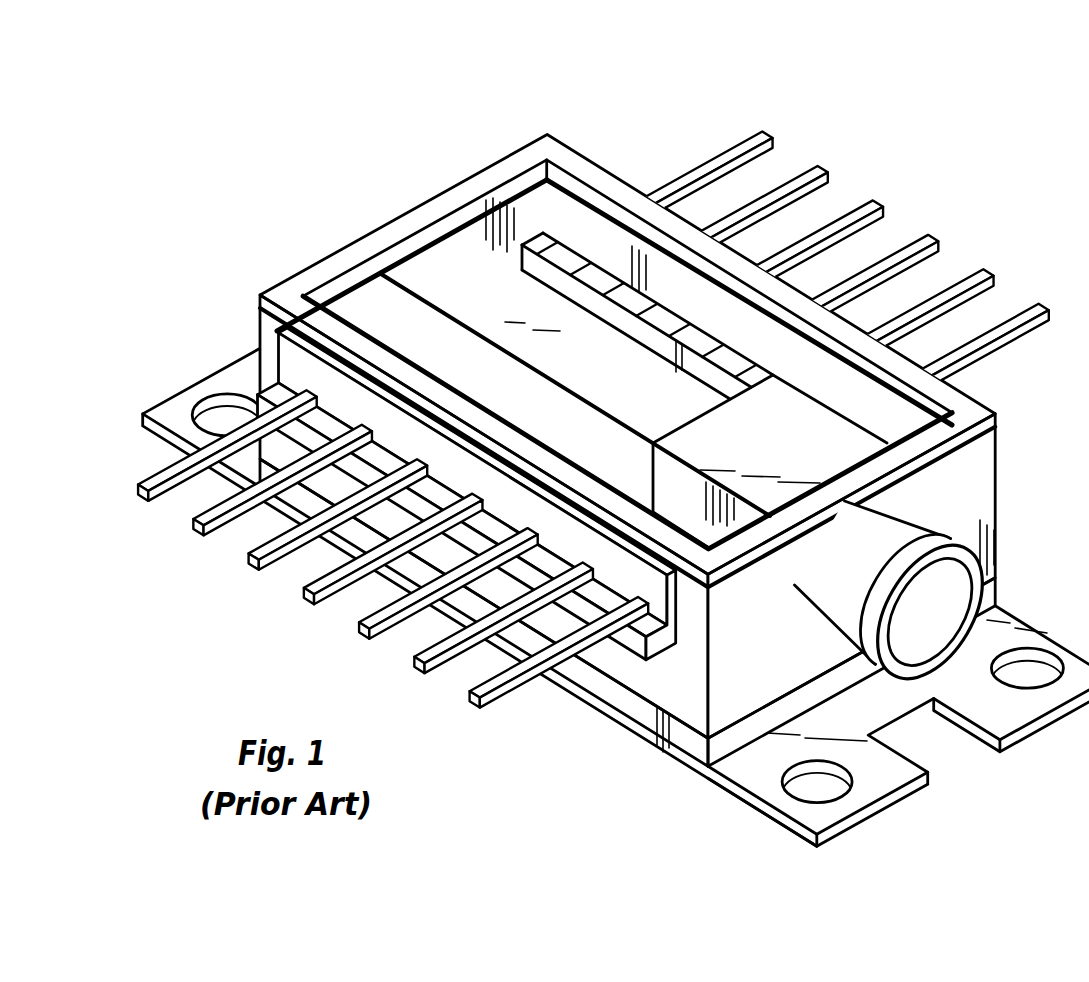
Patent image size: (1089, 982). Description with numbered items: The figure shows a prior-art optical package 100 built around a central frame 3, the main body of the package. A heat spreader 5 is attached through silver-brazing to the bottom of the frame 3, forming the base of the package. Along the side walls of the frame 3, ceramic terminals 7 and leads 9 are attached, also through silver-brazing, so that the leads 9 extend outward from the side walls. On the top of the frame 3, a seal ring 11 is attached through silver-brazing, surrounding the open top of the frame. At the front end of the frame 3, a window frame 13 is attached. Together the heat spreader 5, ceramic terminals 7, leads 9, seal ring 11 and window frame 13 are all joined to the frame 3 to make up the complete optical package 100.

The optical package 100 is at (624, 110).
The frame 3 is at (997, 455).
The heat spreader 5 is at (640, 722).
The ceramic terminals 7 is at (667, 645).
The leads 9 is at (1043, 300).
The seal ring 11 is at (1000, 408).
The window frame 13 is at (950, 530).